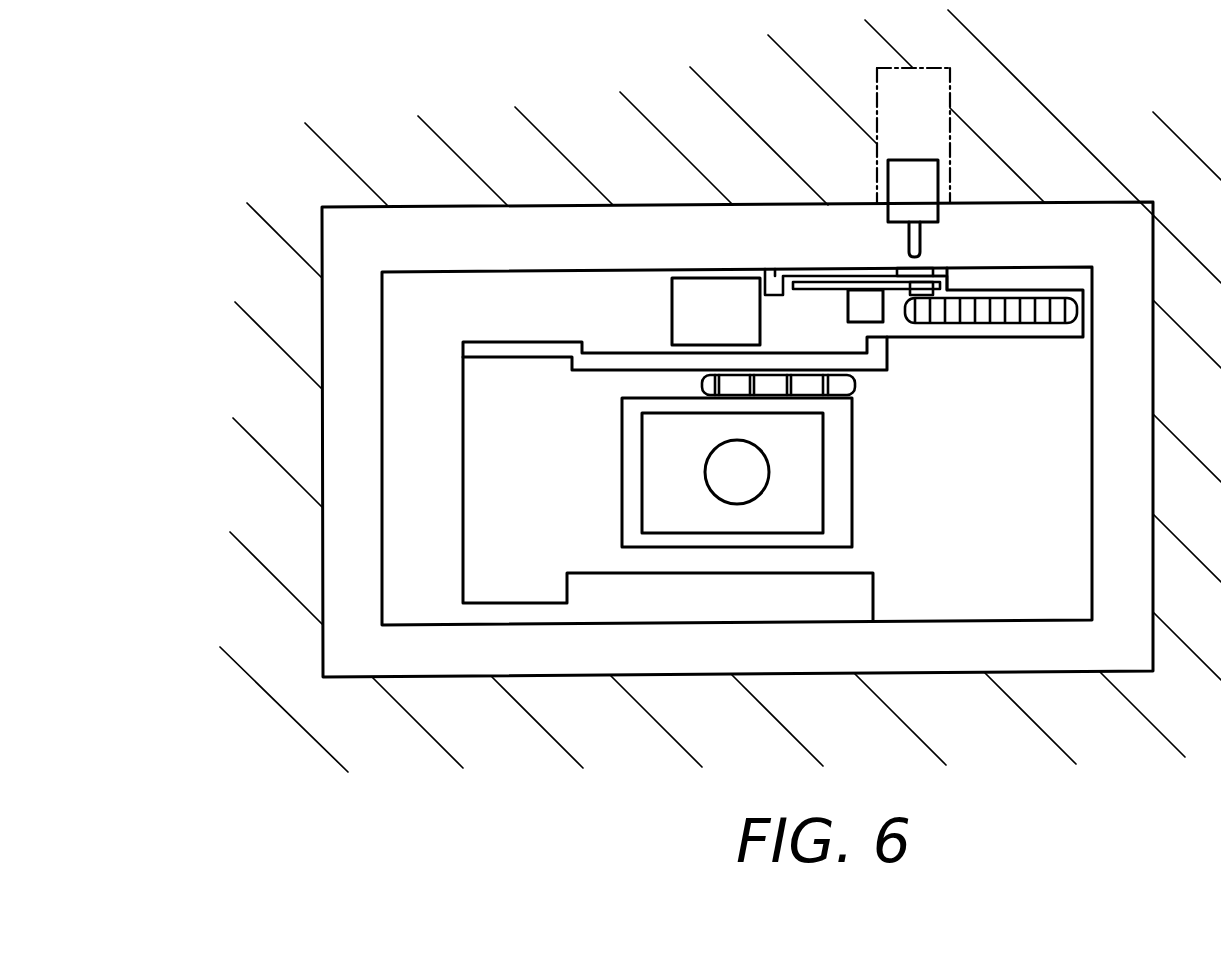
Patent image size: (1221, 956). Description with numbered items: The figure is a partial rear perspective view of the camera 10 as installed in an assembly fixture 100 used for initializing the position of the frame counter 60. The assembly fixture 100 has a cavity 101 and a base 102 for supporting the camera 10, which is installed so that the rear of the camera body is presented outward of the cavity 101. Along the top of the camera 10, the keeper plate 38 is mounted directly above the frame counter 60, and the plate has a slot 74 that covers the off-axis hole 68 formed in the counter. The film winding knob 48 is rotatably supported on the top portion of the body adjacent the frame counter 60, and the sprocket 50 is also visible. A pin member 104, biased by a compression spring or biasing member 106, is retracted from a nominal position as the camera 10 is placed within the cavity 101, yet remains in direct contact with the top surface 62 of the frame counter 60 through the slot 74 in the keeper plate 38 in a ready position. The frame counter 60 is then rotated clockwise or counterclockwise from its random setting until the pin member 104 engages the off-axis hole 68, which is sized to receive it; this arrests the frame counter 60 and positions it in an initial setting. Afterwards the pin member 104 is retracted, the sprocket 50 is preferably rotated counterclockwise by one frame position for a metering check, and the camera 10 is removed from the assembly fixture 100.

The assembly fixture 100 is at (283, 179).
The base 102 is at (374, 700).
The cavity 101 is at (1009, 636).
The camera 10 is at (424, 509).
The keeper plate 38 is at (800, 267).
The top surface 62 is at (870, 270).
The slot 74 is at (926, 268).
The frame counter 60 is at (950, 267).
The off-axis hole 68 is at (912, 289).
The film winding knob 48 is at (1075, 313).
The sprocket 50 is at (855, 384).
The pin member 104 is at (908, 246).
The biasing member 106 is at (878, 68).